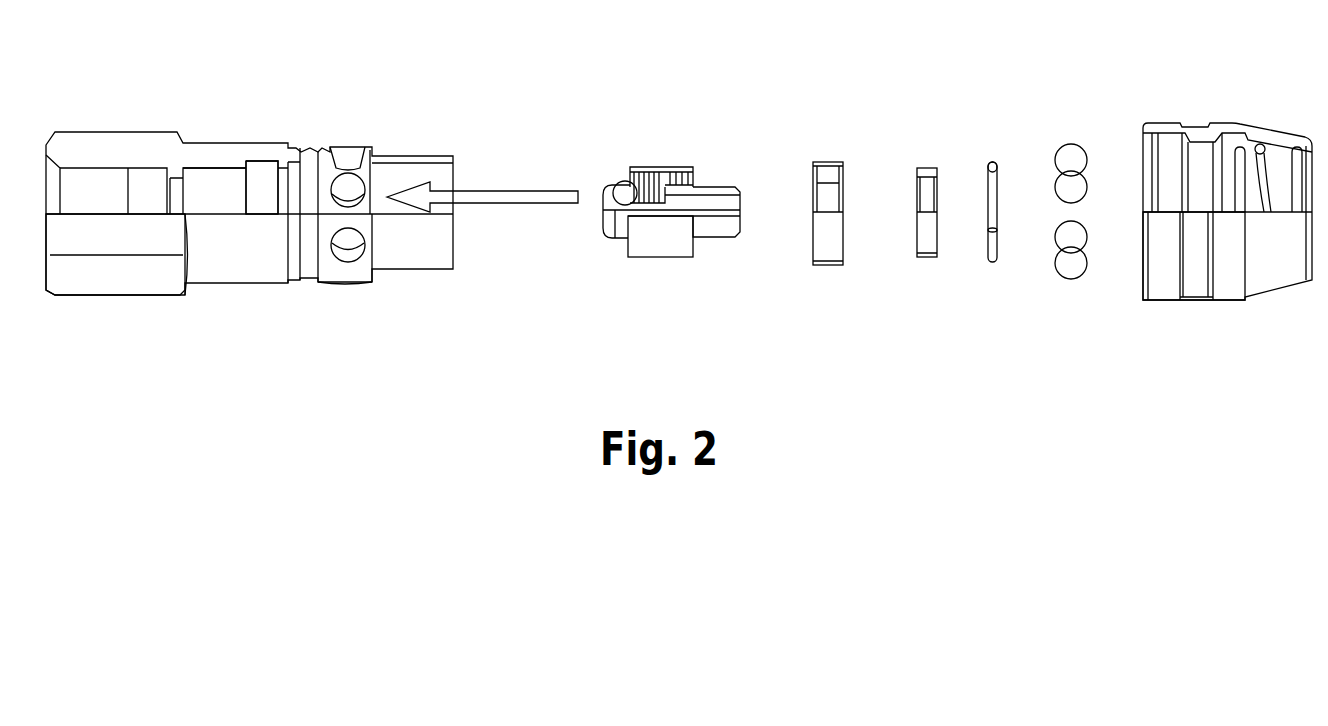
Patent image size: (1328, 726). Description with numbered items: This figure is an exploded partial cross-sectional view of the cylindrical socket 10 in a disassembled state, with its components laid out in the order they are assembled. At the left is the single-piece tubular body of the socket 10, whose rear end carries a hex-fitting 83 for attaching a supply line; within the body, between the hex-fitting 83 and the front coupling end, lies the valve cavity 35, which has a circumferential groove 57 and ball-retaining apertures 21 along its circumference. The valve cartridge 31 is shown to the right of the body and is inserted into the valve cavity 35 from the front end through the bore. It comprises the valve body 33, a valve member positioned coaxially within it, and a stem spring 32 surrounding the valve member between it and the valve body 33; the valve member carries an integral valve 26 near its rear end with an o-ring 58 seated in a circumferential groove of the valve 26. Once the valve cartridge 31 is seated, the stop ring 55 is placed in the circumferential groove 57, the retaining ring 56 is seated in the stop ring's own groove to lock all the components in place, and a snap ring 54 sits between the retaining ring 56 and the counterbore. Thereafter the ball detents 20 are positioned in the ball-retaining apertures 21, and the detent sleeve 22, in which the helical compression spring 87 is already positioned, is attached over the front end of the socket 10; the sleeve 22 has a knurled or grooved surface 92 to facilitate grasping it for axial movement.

The socket 10 is at (215, 140).
The hex-fitting 83 is at (96, 302).
The valve cavity 35 is at (226, 163).
The circumferential groove 57 is at (266, 163).
The ball-retaining apertures 21 is at (356, 181).
The valve 26 is at (599, 216).
The o-ring 58 is at (622, 182).
The stem spring 32 is at (648, 170).
The valve cartridge 31 is at (676, 165).
The valve body 33 is at (658, 263).
The stop ring 55 is at (831, 158).
The retaining ring 56 is at (929, 165).
The snap ring 54 is at (997, 162).
The ball detents 20 is at (1069, 283).
The detent sleeve 22 is at (1279, 124).
The helical compression spring 87 is at (1258, 143).
The knurled or grooved surface 92 is at (1201, 306).